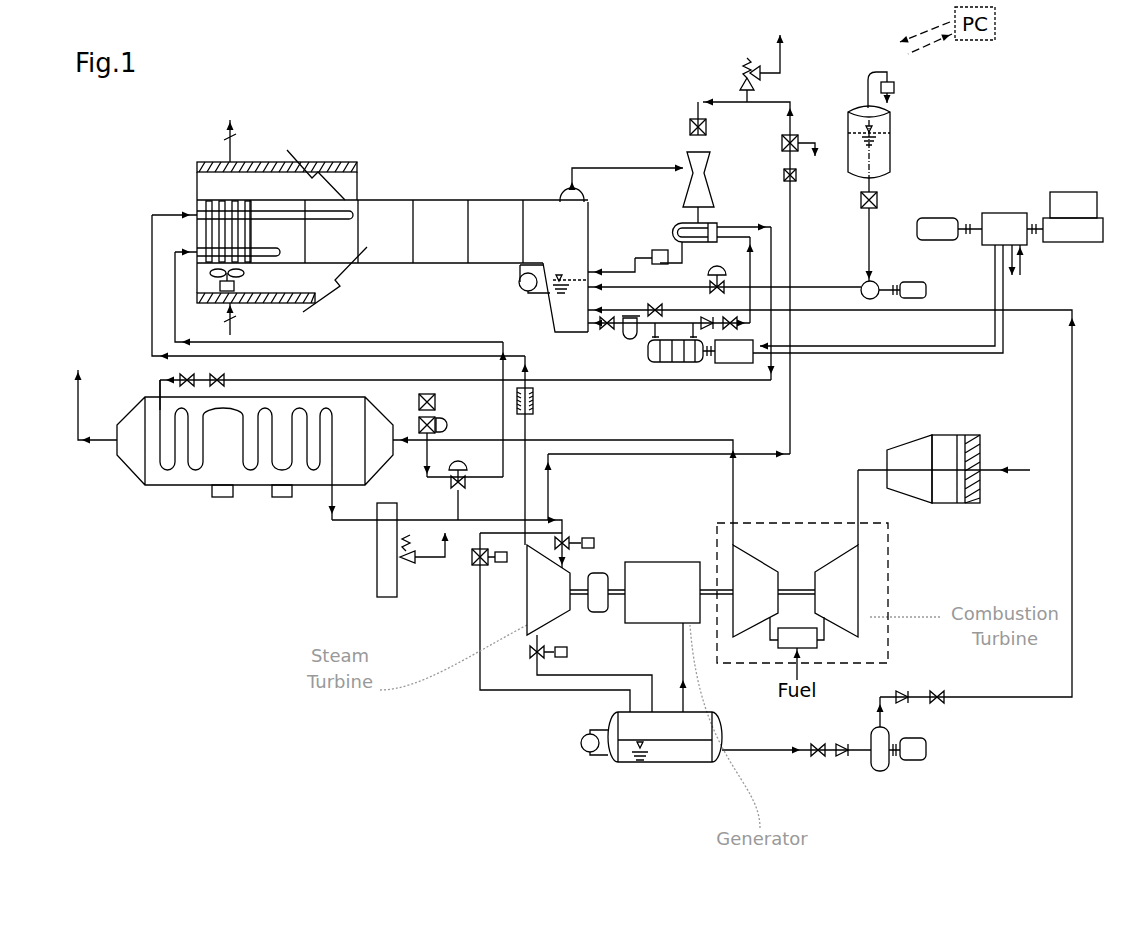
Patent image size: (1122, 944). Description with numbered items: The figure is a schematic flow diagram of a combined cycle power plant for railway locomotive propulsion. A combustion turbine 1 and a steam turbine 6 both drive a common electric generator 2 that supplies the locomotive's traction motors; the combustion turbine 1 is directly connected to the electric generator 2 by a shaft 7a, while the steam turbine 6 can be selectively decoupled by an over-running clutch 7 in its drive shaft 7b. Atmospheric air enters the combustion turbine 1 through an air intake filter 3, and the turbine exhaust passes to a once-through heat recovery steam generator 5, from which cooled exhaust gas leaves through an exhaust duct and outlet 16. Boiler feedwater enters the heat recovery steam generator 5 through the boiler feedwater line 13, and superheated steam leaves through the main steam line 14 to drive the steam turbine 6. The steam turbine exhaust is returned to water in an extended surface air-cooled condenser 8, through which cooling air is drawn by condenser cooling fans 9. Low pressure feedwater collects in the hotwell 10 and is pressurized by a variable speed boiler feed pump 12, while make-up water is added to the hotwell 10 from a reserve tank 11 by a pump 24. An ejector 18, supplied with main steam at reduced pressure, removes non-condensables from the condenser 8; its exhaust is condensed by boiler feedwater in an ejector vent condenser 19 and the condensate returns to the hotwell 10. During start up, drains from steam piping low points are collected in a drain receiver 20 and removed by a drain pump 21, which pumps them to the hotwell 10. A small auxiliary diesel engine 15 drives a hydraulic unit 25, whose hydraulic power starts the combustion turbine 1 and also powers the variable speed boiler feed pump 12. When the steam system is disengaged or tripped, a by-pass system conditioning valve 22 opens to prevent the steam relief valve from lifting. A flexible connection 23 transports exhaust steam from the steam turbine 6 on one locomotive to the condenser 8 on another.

The combustion turbine 1 is at (778, 523).
The electric generator 2 is at (655, 562).
The air intake filter 3 is at (940, 505).
The once-through heat recovery steam generator 5 is at (312, 485).
The steam turbine 6 is at (527, 600).
The over-running clutch 7 is at (602, 612).
The shaft 7a is at (705, 588).
The drive shaft 7b is at (612, 568).
The condenser 8 is at (426, 201).
The condenser cooling fans 9 is at (246, 276).
The hotwell 10 is at (553, 322).
The reserve tank 11 is at (892, 135).
The variable speed boiler feed pump 12 is at (690, 364).
The boiler feedwater line 13 is at (733, 380).
The main steam line 14 is at (352, 521).
The auxiliary diesel engine 15 is at (1080, 200).
The exhaust duct and outlet 16 is at (97, 437).
The ejector 18 is at (710, 172).
The ejector vent condenser 19 is at (717, 223).
The drain receiver 20 is at (608, 722).
The drain pump 21 is at (871, 733).
The by-pass system conditioning valve 22 is at (465, 487).
The flexible connection 23 is at (536, 400).
The pump 24 is at (900, 283).
The hydraulic unit 25 is at (1005, 213).